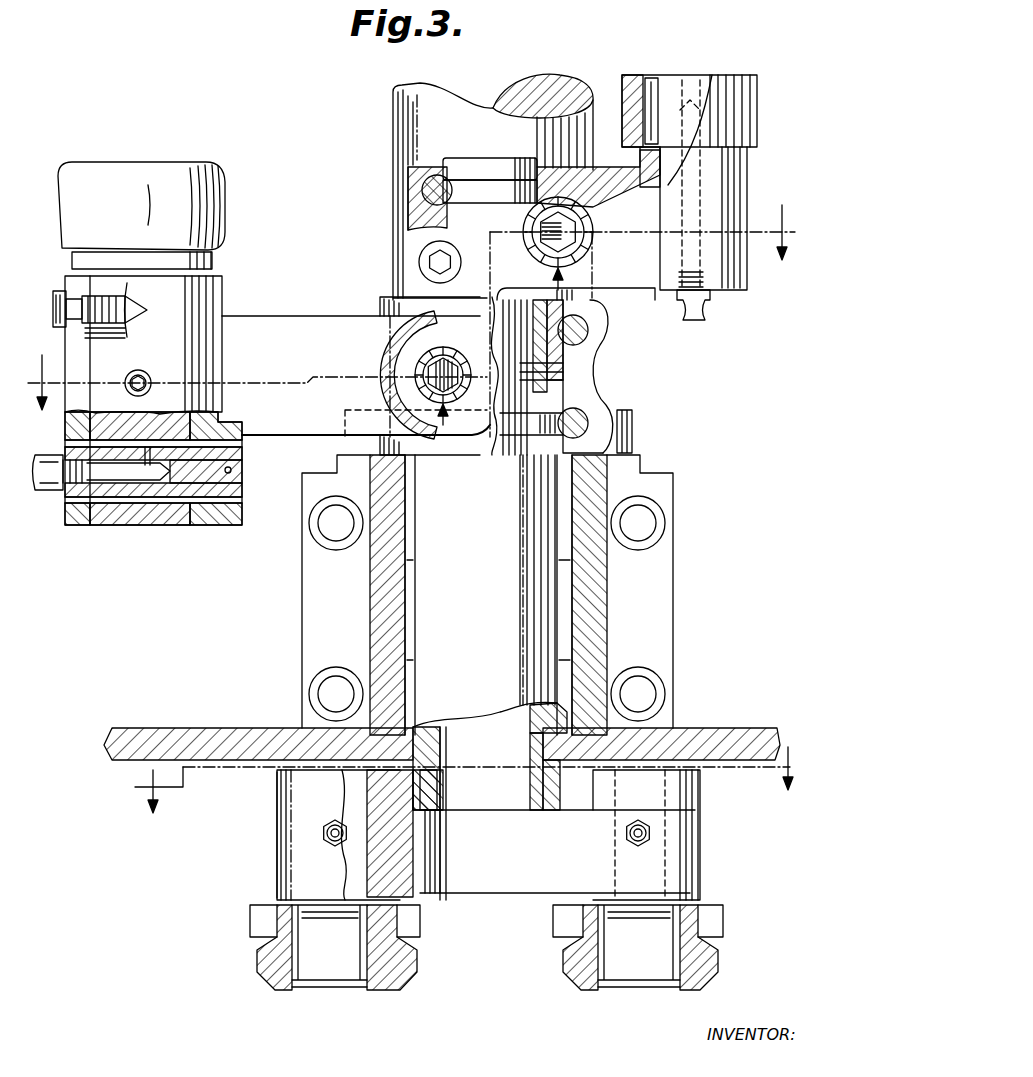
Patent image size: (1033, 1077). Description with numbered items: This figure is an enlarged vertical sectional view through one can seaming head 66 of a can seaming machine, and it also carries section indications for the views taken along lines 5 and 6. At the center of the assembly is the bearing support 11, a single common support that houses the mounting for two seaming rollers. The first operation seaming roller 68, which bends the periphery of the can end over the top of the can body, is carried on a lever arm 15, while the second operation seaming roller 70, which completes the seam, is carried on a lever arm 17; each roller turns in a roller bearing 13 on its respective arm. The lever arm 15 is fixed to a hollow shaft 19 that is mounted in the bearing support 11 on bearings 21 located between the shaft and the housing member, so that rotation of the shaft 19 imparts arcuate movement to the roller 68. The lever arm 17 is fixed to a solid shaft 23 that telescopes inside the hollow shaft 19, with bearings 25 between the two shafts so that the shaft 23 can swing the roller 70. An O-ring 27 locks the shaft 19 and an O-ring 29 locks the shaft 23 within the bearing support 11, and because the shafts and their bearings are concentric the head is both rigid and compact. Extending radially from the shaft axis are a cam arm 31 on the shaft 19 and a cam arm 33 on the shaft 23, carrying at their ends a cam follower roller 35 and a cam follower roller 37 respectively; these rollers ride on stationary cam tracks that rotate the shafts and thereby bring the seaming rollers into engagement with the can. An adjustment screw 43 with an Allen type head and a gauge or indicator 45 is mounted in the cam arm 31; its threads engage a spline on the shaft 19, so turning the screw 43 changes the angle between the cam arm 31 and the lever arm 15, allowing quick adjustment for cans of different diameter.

The section line 5- 5 is at (408, 307).
The section line 6- 6 is at (460, 780).
The bearing support 11 is at (607, 595).
The roller bearing 13 is at (295, 990).
The lever arm 15 is at (277, 820).
The lever arm 17 is at (527, 893).
The hollow shaft 19 is at (578, 356).
The bearings 21 is at (600, 478).
The solid shaft 23 is at (572, 380).
The bearings 25 is at (568, 372).
The O-ring 27 is at (590, 322).
The O-ring 29 is at (422, 188).
The cam arm 31 is at (278, 316).
The cam arm 33 is at (646, 271).
The cam follower roller 35 is at (226, 179).
The cam follower roller 37 is at (757, 92).
The adjustment screw 43 is at (428, 355).
The gauge or indicator 45 is at (425, 378).
The can seaming head 66 is at (277, 873).
The first operation seaming roller 68 is at (257, 955).
The second operation seaming roller 70 is at (723, 953).